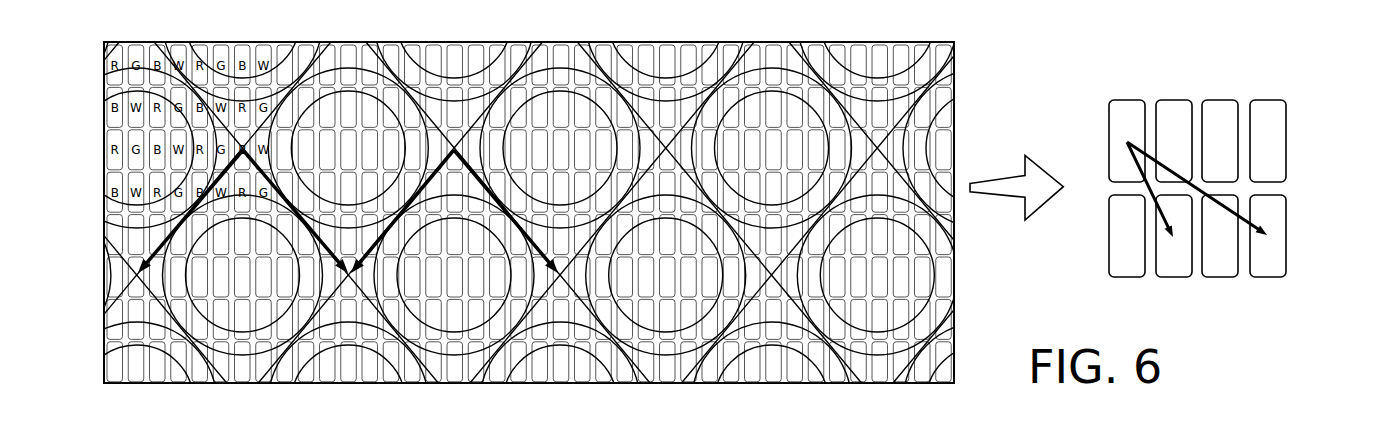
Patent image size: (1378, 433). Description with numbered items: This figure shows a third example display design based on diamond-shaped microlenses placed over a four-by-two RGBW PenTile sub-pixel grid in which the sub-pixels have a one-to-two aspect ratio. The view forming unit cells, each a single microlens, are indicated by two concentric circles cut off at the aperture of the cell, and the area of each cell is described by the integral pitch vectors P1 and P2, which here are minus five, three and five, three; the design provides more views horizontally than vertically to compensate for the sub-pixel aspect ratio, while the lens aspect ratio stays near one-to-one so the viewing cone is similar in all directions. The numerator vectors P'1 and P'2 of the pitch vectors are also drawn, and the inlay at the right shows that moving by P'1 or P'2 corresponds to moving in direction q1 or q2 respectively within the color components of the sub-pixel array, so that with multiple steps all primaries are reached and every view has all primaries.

The first pitch vector P1 is at (190, 211).
The second pitch vector P2 is at (295, 211).
The first pitch vector numerator P'1 is at (402, 211).
The second pitch vector numerator P'2 is at (506, 211).
The first sub-pixel array direction q1 is at (1200, 188).
The second sub-pixel array direction q2 is at (1127, 158).